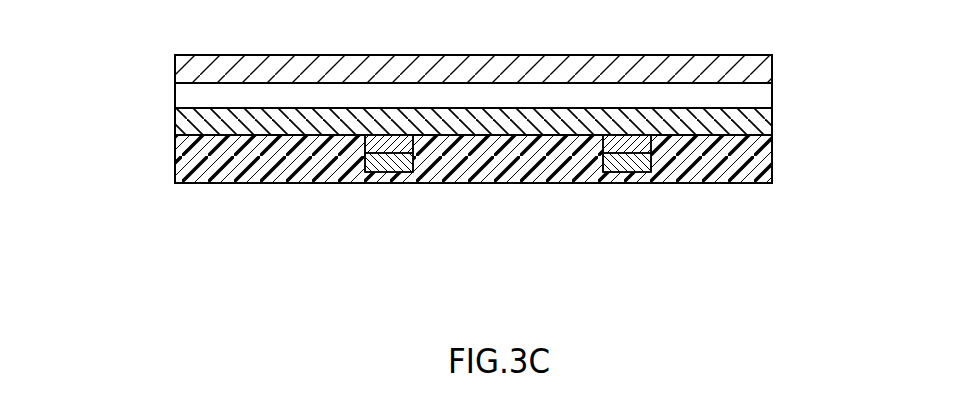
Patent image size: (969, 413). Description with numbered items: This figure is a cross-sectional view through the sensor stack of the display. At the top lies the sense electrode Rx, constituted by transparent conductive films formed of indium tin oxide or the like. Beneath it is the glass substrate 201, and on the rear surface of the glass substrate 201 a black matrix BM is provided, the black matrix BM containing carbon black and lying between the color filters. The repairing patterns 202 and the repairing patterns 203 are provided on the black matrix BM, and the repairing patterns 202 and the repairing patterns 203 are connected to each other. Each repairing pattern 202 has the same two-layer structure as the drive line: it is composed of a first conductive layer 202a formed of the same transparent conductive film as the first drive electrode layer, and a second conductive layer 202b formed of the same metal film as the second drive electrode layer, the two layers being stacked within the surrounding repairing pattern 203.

The sense electrode Rx is at (752, 70).
The glass substrate 201 is at (752, 93).
The black matrix BM is at (752, 120).
The repairing pattern 203 is at (767, 165).
The repairing pattern 202 is at (540, 204).
The first conductive layer 202a is at (485, 236).
The second conductive layer 202b is at (411, 143).